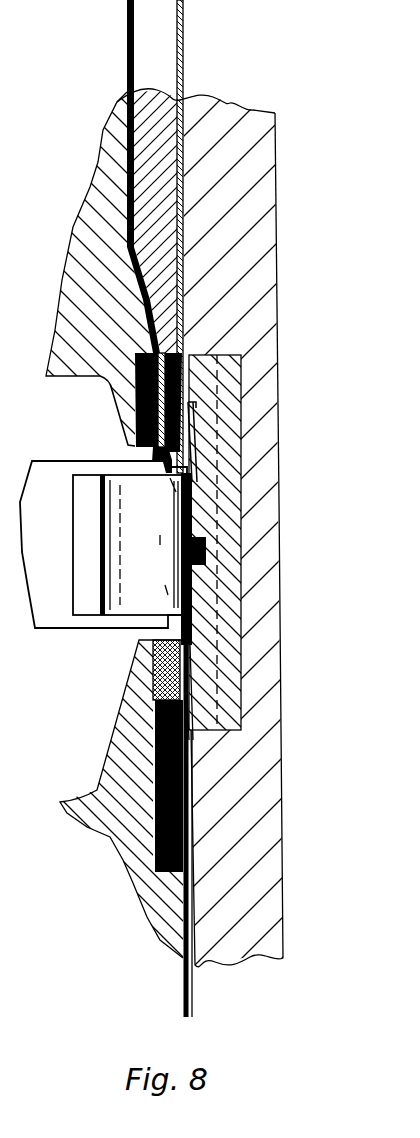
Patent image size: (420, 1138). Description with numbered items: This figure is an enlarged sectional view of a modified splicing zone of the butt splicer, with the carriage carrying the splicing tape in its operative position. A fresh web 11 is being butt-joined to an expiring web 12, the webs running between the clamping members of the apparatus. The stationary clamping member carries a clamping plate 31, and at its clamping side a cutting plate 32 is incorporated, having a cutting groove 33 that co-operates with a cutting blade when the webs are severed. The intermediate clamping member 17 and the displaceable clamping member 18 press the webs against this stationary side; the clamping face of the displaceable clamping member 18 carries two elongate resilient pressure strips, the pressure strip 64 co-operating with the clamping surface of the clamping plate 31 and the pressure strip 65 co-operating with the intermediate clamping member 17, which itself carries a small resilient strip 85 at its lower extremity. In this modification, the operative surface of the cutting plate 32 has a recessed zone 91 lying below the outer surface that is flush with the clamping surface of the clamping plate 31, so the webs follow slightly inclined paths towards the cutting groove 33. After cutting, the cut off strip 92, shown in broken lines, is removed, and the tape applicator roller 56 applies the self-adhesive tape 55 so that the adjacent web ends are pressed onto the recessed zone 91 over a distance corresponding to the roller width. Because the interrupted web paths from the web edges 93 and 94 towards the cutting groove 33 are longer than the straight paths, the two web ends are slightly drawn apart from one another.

The fresh web 11 is at (125, 30).
The expiring web 12 is at (183, 26).
The intermediate clamping member 17 is at (147, 212).
The displaceable clamping member 18 is at (105, 165).
The clamping plate 31 is at (263, 201).
The cutting plate 32 is at (243, 571).
The cutting groove 33 is at (198, 543).
The self-adhesive tape 55 is at (107, 598).
The tape applicator roller 56 is at (127, 555).
The pressure strip 64 is at (153, 677).
The pressure strip 65 is at (101, 411).
The small resilient strip 85 is at (177, 385).
The recessed zone 91 is at (200, 650).
The cut off strip 92 is at (167, 488).
The web edge 93 is at (192, 410).
The web edge 94 is at (200, 678).